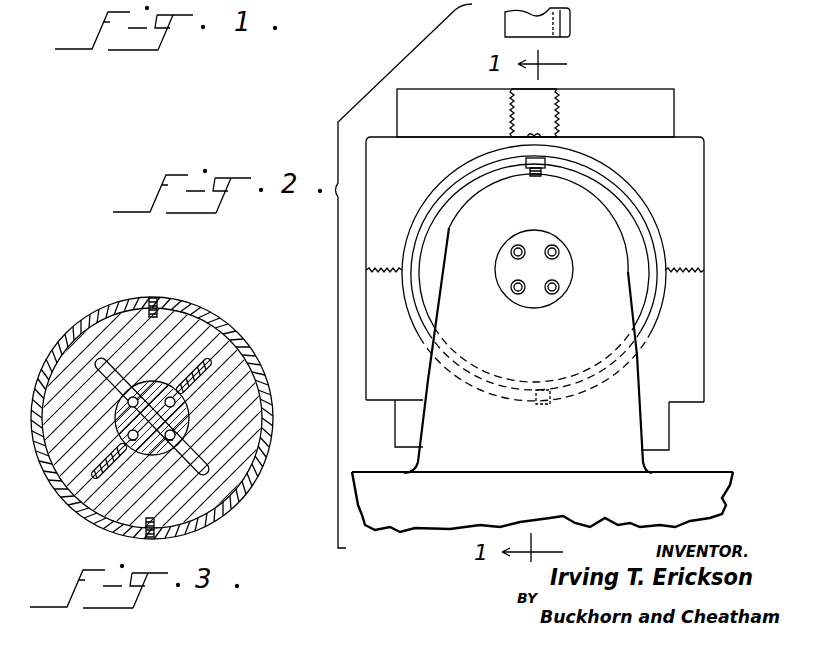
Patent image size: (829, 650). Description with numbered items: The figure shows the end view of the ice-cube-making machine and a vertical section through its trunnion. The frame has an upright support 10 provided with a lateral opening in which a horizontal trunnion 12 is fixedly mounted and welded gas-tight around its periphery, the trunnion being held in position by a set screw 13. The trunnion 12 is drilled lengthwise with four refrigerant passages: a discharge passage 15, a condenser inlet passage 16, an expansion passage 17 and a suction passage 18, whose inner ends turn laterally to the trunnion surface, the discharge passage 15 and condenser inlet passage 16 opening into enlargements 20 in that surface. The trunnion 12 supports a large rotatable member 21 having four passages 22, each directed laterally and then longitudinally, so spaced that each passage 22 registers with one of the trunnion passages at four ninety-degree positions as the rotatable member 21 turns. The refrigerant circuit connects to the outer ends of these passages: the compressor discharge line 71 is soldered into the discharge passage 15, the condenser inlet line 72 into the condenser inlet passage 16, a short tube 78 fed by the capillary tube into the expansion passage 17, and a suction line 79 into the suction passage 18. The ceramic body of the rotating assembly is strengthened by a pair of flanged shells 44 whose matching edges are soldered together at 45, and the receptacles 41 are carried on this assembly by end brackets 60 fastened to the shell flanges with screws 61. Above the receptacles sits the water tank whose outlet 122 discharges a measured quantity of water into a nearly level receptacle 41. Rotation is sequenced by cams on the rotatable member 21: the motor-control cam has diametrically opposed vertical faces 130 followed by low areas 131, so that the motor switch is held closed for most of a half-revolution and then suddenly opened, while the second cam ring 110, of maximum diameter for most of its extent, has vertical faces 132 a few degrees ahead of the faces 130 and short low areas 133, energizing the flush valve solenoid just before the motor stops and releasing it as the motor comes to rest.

In FIG. 2, the upright support 10 is at (644, 466).
In FIG. 2, the trunnion 12 is at (574, 268).
In FIG. 3, the trunnion 12 is at (190, 418).
In FIG. 2, the set screw 13 is at (546, 167).
In FIG. 3, the discharge passage 15 is at (128, 433).
In FIG. 3, the condenser inlet passage 16 is at (176, 434).
In FIG. 3, the expansion passage 17 is at (175, 404).
In FIG. 3, the suction passage 18 is at (128, 402).
In FIG. 3, the enlargements 20 is at (133, 443).
In FIG. 3, the rotatable member 21 is at (262, 403).
In FIG. 3, the passages 22 is at (105, 368).
In FIG. 2, the receptacles 41 is at (676, 106).
In FIG. 2, the flanged shells 44 is at (706, 197).
In FIG. 2, the soldered joint 45 is at (385, 274).
In FIG. 2, the end brackets 60 is at (558, 101).
In FIG. 2, the screws 61 is at (534, 113).
In FIG. 2, the discharge line 71 is at (513, 291).
In FIG. 2, the condenser inlet line 72 is at (558, 288).
In FIG. 2, the short tube 78 is at (557, 247).
In FIG. 2, the suction line 79 is at (512, 248).
In FIG. 3, the second cam ring 110 is at (236, 502).
In FIG. 2, the outlet 122 is at (572, 26).
In FIG. 2, the vertical faces 130 is at (528, 156).
In FIG. 2, the low areas 131 is at (573, 152).
In FIG. 2, the vertical faces 132 is at (522, 152).
In FIG. 2, the low areas 133 is at (548, 158).